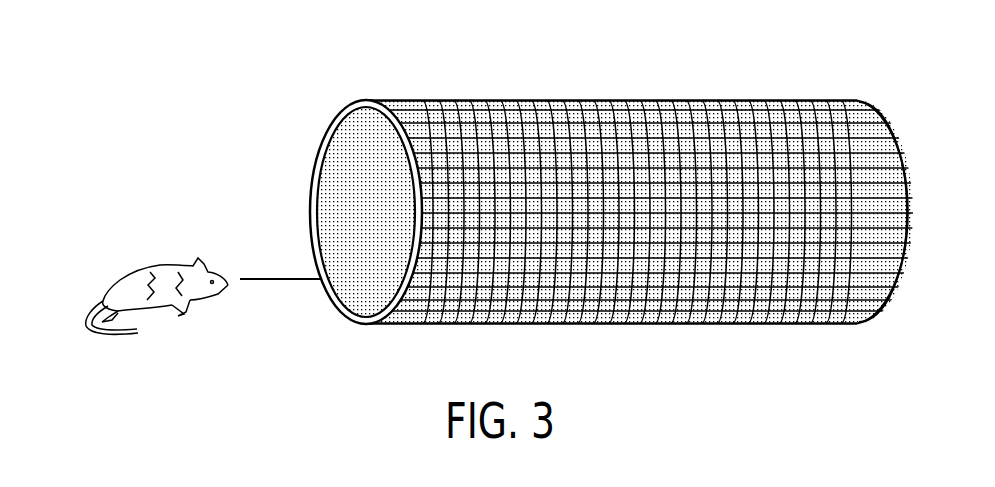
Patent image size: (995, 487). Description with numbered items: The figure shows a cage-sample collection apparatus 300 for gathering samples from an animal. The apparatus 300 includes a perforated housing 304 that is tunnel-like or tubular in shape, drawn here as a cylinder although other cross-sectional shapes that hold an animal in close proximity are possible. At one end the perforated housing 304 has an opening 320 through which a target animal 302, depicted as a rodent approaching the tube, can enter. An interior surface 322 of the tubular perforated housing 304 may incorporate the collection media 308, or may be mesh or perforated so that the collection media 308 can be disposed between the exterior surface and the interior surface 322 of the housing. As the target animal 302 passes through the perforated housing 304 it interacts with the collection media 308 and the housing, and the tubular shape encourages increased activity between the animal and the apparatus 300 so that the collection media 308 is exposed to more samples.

The cage-sample collection apparatus 300 is at (222, 94).
The target animal 302 is at (150, 275).
The perforated housing 304 is at (490, 122).
The collection media 308 is at (642, 122).
The opening 320 is at (340, 158).
The interior surface 322 is at (335, 218).